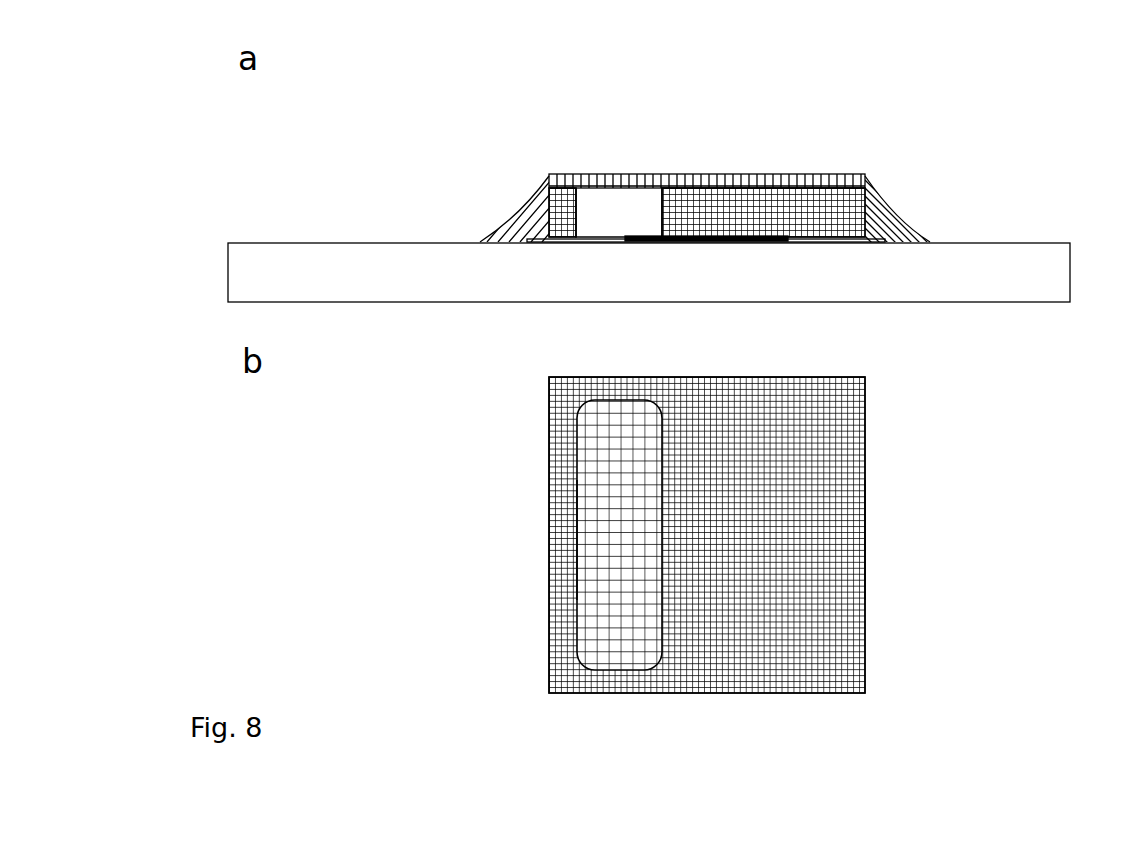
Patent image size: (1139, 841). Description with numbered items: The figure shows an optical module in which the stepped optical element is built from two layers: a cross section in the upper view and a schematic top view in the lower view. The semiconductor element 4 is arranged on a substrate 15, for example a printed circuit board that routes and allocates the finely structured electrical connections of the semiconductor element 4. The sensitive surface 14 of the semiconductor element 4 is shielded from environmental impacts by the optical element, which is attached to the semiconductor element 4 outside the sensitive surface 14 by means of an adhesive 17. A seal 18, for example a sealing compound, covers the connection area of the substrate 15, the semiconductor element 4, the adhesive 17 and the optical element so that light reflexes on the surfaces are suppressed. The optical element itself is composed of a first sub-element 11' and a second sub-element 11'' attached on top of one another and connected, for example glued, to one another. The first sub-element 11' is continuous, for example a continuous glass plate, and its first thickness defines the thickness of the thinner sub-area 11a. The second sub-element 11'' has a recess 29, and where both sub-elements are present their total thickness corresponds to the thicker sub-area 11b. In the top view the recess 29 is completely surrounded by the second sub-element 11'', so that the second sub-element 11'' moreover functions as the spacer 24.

In FIG. 8a, the semiconductor element 4 is at (792, 240).
In FIG. 8a, the first sub-element 11' is at (707, 119).
In FIG. 8b, the first sub-element 11' is at (707, 516).
In FIG. 8a, the second sub-element 11'' is at (724, 266).
In FIG. 8b, the thinner sub-area 11a is at (632, 532).
In FIG. 8b, the thicker sub-area 11b is at (712, 532).
In FIG. 8a, the sensitive surface 14 is at (693, 228).
In FIG. 8a, the substrate 15 is at (900, 250).
In FIG. 8a, the adhesive 17 is at (883, 203).
In FIG. 8a, the seal 18 is at (900, 225).
In FIG. 8a, the spacer 24 is at (560, 198).
In FIG. 8a, the recess 29 is at (597, 215).